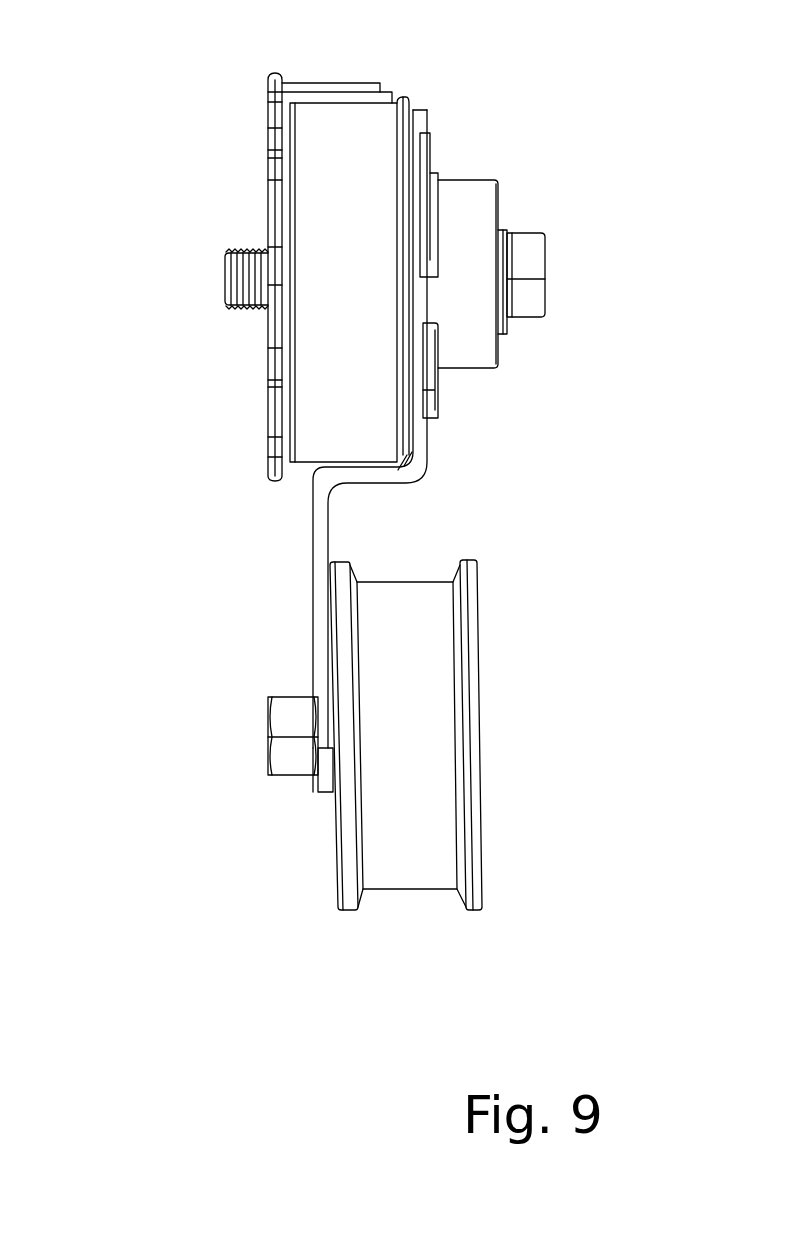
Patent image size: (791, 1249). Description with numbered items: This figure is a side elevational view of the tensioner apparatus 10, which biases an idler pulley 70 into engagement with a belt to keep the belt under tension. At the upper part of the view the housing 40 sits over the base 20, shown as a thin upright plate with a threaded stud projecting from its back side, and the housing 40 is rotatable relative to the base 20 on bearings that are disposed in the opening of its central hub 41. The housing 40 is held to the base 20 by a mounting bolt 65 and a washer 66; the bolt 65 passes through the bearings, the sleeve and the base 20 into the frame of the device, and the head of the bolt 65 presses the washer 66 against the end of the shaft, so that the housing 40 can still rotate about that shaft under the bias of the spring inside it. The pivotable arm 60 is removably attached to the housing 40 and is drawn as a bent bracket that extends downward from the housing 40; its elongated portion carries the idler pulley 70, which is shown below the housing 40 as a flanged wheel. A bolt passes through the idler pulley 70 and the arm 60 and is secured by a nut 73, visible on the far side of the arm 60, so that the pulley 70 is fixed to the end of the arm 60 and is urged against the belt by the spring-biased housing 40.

The tensioner apparatus 10 is at (203, 420).
The base 20 is at (273, 123).
The housing 40 is at (370, 153).
The central hub 41 is at (481, 360).
The arm 60 is at (322, 552).
The mounting bolt 65 is at (527, 256).
The washer 66 is at (505, 226).
The idler pulley 70 is at (422, 862).
The nut 73 is at (292, 757).